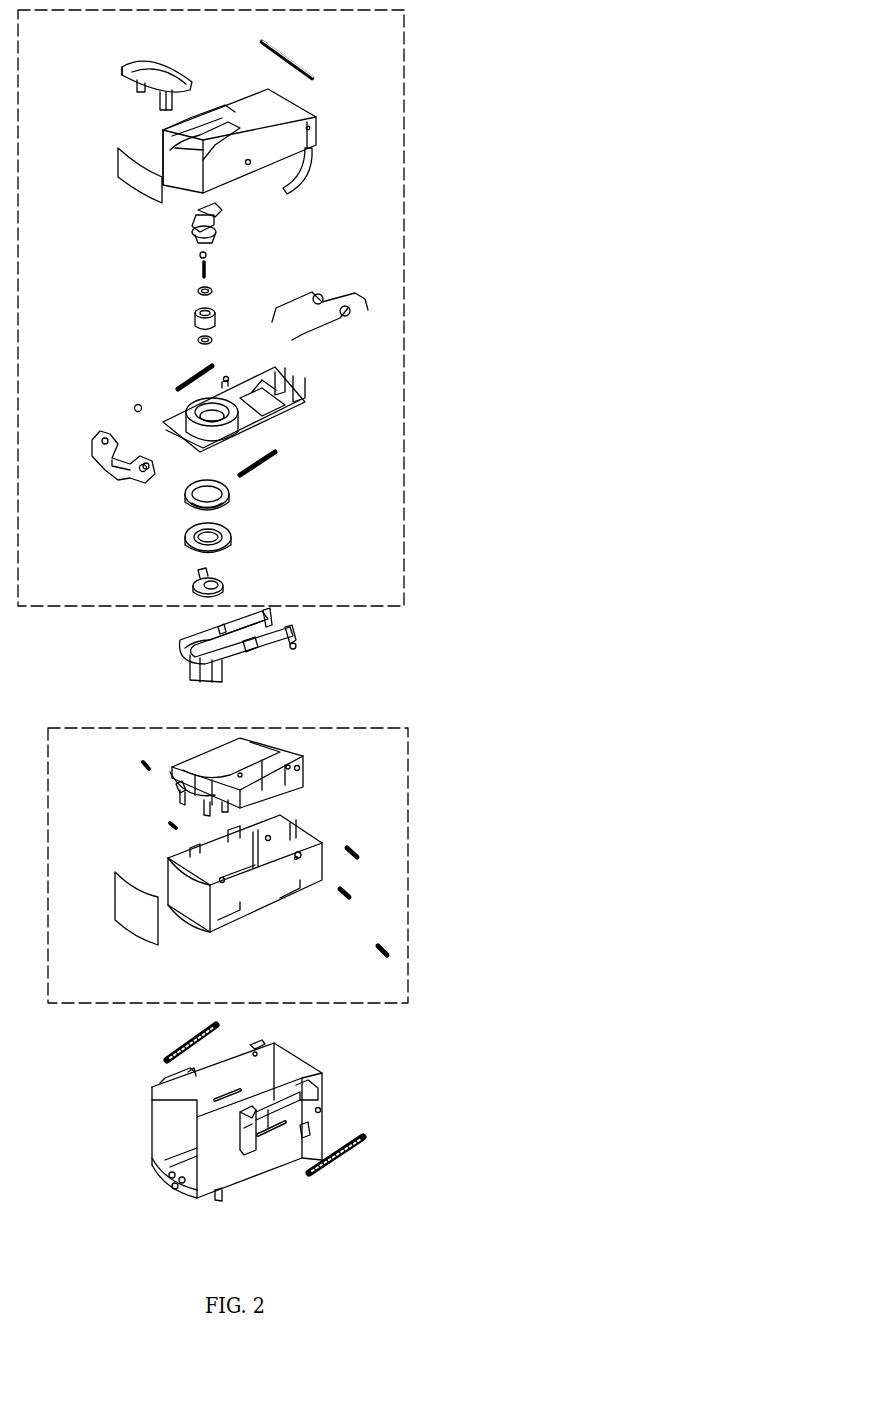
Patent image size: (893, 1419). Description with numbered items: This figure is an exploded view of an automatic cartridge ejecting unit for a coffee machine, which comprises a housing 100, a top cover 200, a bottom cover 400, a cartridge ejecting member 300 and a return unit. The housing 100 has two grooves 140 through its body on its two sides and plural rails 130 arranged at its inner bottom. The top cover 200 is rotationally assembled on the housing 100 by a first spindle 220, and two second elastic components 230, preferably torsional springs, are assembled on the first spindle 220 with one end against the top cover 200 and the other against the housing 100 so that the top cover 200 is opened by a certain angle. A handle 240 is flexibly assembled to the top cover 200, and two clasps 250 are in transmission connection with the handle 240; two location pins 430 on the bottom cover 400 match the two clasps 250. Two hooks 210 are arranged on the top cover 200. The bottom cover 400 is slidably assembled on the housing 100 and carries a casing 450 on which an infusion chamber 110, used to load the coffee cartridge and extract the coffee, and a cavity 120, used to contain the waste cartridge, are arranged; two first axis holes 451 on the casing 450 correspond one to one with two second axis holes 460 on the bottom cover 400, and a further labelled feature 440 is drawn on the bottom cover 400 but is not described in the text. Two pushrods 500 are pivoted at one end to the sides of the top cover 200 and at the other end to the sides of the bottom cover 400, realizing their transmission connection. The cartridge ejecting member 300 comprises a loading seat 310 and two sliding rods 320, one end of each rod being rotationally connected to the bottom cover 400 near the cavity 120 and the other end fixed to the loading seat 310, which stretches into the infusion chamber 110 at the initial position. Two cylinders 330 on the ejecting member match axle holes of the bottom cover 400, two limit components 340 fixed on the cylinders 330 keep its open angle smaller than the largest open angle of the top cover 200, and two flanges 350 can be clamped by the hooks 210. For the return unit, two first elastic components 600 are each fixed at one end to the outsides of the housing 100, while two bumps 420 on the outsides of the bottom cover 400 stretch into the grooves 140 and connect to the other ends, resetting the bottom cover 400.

The housing 100 is at (266, 1157).
The infusion chamber 110 is at (176, 787).
The cavity 120 is at (275, 762).
The rails 130 is at (160, 1170).
The grooves 140 is at (283, 1127).
The top cover 200 is at (405, 190).
The hooks 210 is at (260, 441).
The first spindle 220 is at (298, 62).
The second elastic components 230 is at (345, 318).
The handle 240 is at (160, 80).
The clasps 250 is at (143, 472).
The cartridge ejecting member 300 is at (180, 650).
The loading seat 310 is at (193, 673).
The sliding rods 320 is at (232, 628).
The cylinders 330 is at (296, 642).
The limit components 340 is at (290, 641).
The flanges 350 is at (276, 646).
The bottom cover 400 is at (410, 850).
The bumps 420 is at (300, 855).
The location pins 430 is at (169, 824).
The hole 440 is at (297, 860).
The casing 450 is at (280, 787).
The first axis holes 451 is at (299, 768).
The second axis holes 460 is at (271, 838).
The pushrods 500 is at (300, 183).
The first elastic components 600 is at (165, 1058).